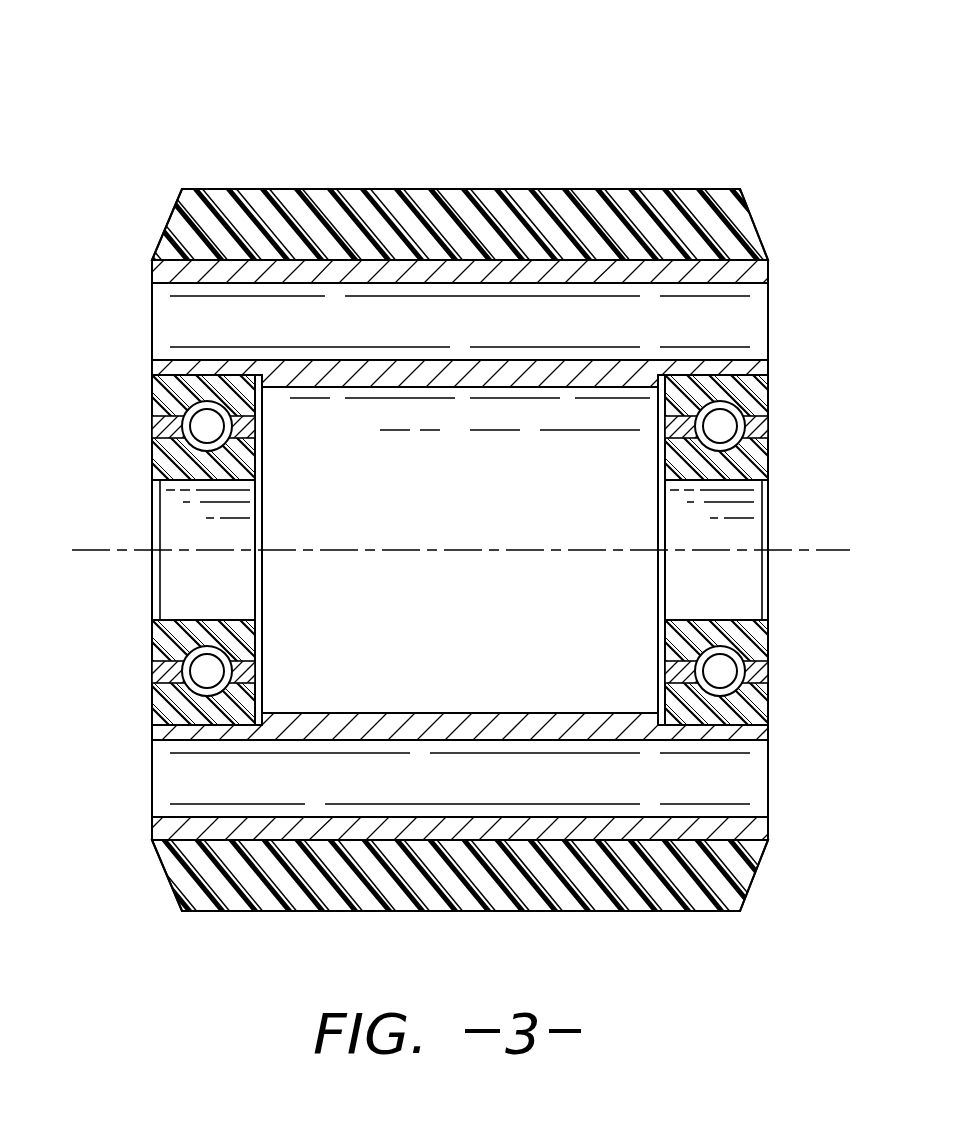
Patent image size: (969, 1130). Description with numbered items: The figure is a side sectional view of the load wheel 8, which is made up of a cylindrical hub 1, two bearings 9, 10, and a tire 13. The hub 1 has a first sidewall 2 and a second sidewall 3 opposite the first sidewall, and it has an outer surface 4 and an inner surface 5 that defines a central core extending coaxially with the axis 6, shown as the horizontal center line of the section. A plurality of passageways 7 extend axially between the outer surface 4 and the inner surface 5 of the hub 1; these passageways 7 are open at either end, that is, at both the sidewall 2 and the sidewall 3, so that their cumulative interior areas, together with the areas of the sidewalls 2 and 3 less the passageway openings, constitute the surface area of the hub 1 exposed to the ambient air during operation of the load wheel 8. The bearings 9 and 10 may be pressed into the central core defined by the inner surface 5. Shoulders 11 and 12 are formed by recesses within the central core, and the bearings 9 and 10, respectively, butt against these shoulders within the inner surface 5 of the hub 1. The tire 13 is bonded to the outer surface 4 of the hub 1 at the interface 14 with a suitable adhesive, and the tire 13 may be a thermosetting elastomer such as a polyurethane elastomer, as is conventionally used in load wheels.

The cylindrical hub 1 is at (150, 326).
The first sidewall 2 is at (150, 298).
The second sidewall 3 is at (768, 298).
The outer surface 4 is at (523, 268).
The inner surface 5 is at (515, 388).
The axis 6 is at (95, 552).
The passageways 7 is at (733, 318).
The load wheel 8 is at (236, 88).
The bearing 9 is at (177, 640).
The bearing 10 is at (743, 642).
The shoulder 11 is at (265, 372).
The shoulder 12 is at (647, 372).
The tire 13 is at (452, 222).
The interface 14 is at (457, 845).